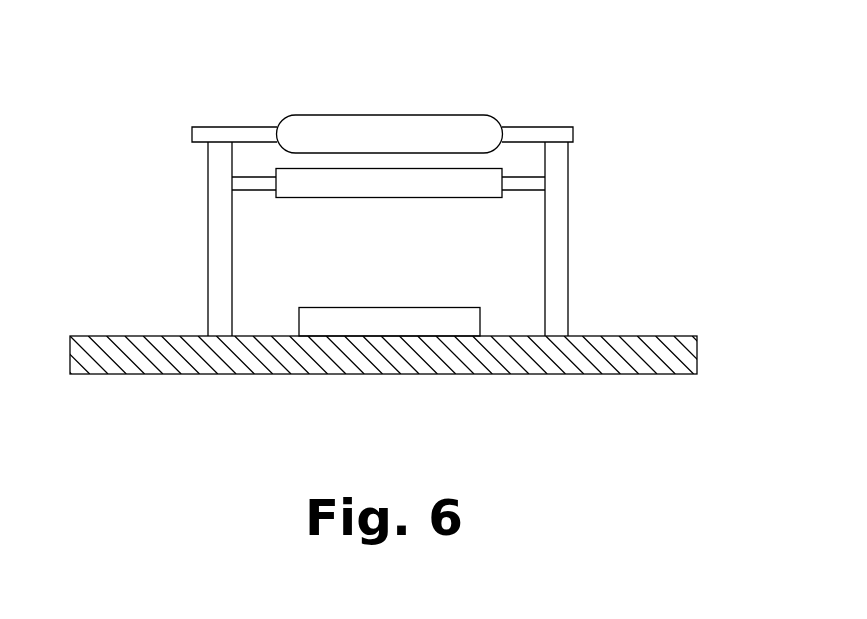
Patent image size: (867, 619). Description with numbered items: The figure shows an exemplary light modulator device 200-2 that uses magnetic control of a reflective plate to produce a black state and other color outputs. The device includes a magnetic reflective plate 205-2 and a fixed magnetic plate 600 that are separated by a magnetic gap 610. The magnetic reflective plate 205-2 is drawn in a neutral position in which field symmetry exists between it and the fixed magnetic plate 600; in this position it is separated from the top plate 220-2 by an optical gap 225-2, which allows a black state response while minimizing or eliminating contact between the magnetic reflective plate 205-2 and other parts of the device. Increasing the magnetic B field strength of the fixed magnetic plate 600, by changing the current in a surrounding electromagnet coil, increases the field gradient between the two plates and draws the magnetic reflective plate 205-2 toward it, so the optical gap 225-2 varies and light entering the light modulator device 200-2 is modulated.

The light modulator device 200-2 is at (218, 72).
The top plate 220-2 is at (417, 146).
The magnetic reflective plate 205-2 is at (417, 193).
The optical gap 225-2 is at (486, 161).
The fixed magnetic plate 600 is at (408, 332).
The magnetic gap 610 is at (463, 271).